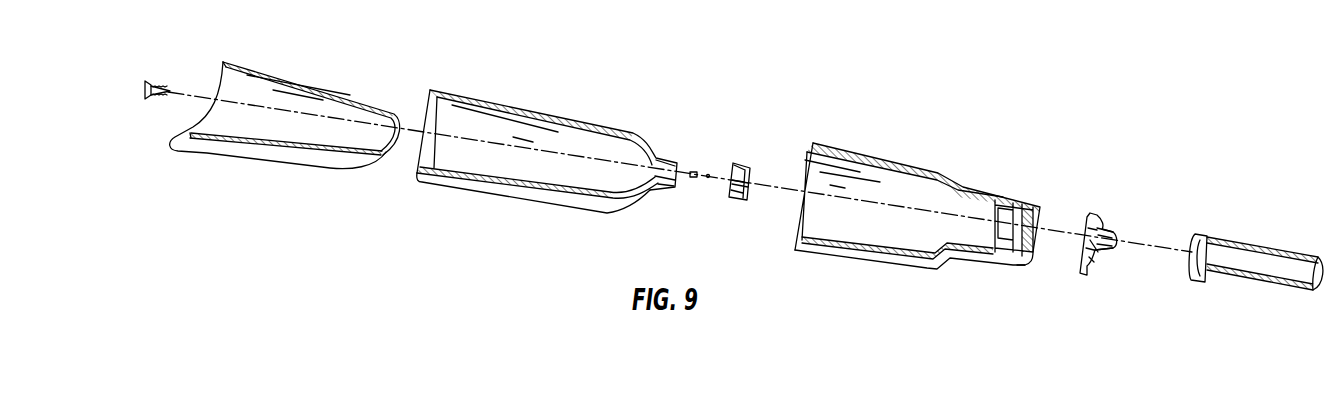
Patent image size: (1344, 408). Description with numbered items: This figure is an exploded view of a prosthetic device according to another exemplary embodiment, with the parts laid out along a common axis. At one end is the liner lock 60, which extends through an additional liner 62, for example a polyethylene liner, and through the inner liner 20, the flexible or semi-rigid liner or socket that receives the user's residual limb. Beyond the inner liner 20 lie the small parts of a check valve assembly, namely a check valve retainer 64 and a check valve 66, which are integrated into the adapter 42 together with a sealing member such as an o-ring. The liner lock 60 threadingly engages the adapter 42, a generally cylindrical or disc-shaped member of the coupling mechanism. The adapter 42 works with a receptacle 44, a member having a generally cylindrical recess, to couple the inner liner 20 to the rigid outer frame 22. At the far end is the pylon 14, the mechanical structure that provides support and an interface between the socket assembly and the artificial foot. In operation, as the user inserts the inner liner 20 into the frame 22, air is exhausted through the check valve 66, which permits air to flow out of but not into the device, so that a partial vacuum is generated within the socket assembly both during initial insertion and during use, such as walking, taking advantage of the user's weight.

The pylon 14 is at (1247, 280).
The inner liner 20 is at (510, 175).
The frame 22 is at (895, 162).
The adapter 42 is at (747, 162).
The receptacle 44 is at (1043, 216).
The liner lock 60 is at (147, 102).
The additional liner 62 is at (300, 160).
The check valve retainer 64 is at (708, 176).
The check valve 66 is at (712, 176).